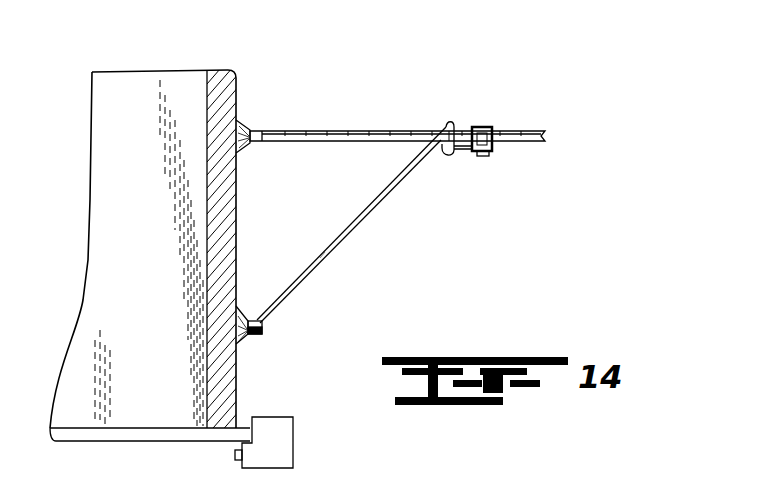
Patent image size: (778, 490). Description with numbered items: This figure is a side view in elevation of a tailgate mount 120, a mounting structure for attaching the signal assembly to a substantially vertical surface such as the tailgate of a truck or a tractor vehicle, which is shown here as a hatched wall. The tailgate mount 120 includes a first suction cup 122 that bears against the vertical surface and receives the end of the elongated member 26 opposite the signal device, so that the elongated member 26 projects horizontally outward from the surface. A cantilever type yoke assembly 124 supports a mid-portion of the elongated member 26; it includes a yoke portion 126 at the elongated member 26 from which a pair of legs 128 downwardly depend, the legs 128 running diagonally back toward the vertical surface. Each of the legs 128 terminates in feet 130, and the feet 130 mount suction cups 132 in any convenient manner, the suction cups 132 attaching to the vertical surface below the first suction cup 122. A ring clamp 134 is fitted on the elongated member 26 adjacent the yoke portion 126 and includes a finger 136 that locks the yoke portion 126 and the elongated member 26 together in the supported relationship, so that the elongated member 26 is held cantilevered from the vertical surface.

The tailgate mount 120 is at (325, 128).
The first suction cup 122 is at (240, 125).
The elongated member 26 is at (355, 131).
The cantilever type yoke assembly 124 is at (362, 222).
The yoke portion 126 is at (445, 152).
The legs 128 is at (320, 258).
The feet 130 is at (263, 331).
The suction cups 132 is at (244, 341).
The ring clamp 134 is at (483, 127).
The finger 136 is at (468, 150).